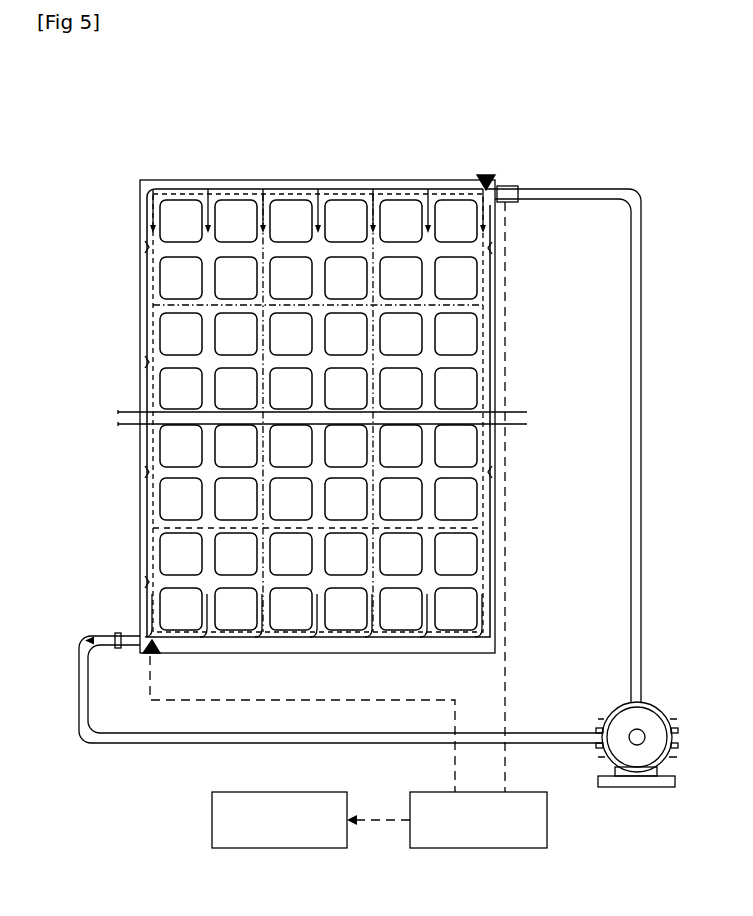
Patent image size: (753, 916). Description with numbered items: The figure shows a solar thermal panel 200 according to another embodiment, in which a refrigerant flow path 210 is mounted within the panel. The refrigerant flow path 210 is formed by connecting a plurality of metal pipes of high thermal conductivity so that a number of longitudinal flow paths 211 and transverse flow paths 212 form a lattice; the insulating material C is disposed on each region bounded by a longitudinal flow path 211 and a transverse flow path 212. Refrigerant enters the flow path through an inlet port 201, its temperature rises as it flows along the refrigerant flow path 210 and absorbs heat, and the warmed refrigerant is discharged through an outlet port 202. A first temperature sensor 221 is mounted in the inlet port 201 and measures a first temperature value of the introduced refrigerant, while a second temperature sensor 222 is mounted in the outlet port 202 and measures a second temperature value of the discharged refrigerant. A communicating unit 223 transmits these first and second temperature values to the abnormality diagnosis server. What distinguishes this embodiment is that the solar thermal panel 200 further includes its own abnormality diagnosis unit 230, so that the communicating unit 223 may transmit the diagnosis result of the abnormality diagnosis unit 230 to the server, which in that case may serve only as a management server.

The solar thermal panel 200 is at (134, 211).
The insulating material C is at (167, 284).
The refrigerant flow path 210 is at (100, 306).
The longitudinal flow path 211 is at (205, 332).
The transverse flow path 212 is at (178, 360).
The first temperature sensor 221 is at (485, 168).
The inlet port 201 is at (506, 188).
The outlet port 202 is at (118, 648).
The second temperature sensor 222 is at (166, 660).
The abnormality diagnosis unit 230 is at (264, 853).
The communicating unit 223 is at (467, 853).